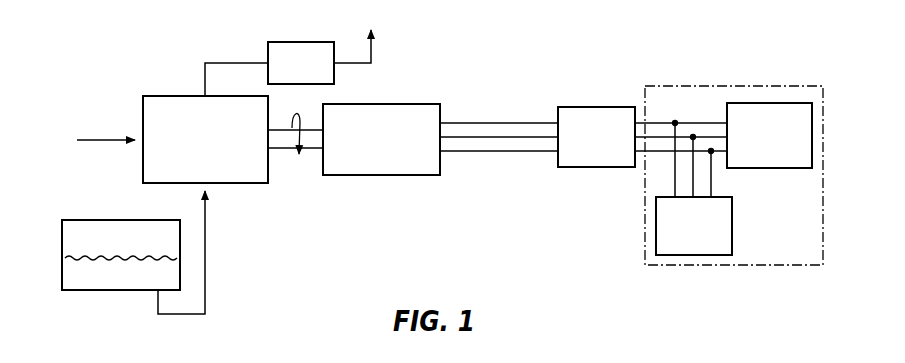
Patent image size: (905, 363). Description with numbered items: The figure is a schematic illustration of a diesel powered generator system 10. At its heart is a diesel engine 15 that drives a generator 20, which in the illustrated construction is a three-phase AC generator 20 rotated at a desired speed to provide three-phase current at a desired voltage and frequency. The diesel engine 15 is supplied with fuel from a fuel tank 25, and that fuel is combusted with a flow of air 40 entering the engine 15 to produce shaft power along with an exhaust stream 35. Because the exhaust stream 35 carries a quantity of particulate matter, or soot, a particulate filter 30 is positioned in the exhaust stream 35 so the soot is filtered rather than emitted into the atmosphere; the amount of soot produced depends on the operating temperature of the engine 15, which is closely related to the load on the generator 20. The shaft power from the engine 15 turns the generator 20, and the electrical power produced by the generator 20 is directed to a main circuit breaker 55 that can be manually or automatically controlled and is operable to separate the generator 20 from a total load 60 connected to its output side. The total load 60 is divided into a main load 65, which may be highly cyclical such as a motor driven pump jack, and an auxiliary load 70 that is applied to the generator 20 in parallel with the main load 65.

The system 10 is at (544, 32).
The diesel engine 15 is at (194, 149).
The generator 20 is at (371, 150).
The fuel tank 25 is at (110, 291).
The particulate filter 30 is at (291, 72).
The exhaust stream 35 is at (232, 62).
The flow of air 40 is at (107, 138).
The main circuit breaker 55 is at (585, 149).
The total load 60 is at (742, 267).
The main load 65 is at (759, 149).
The auxiliary load 70 is at (683, 239).